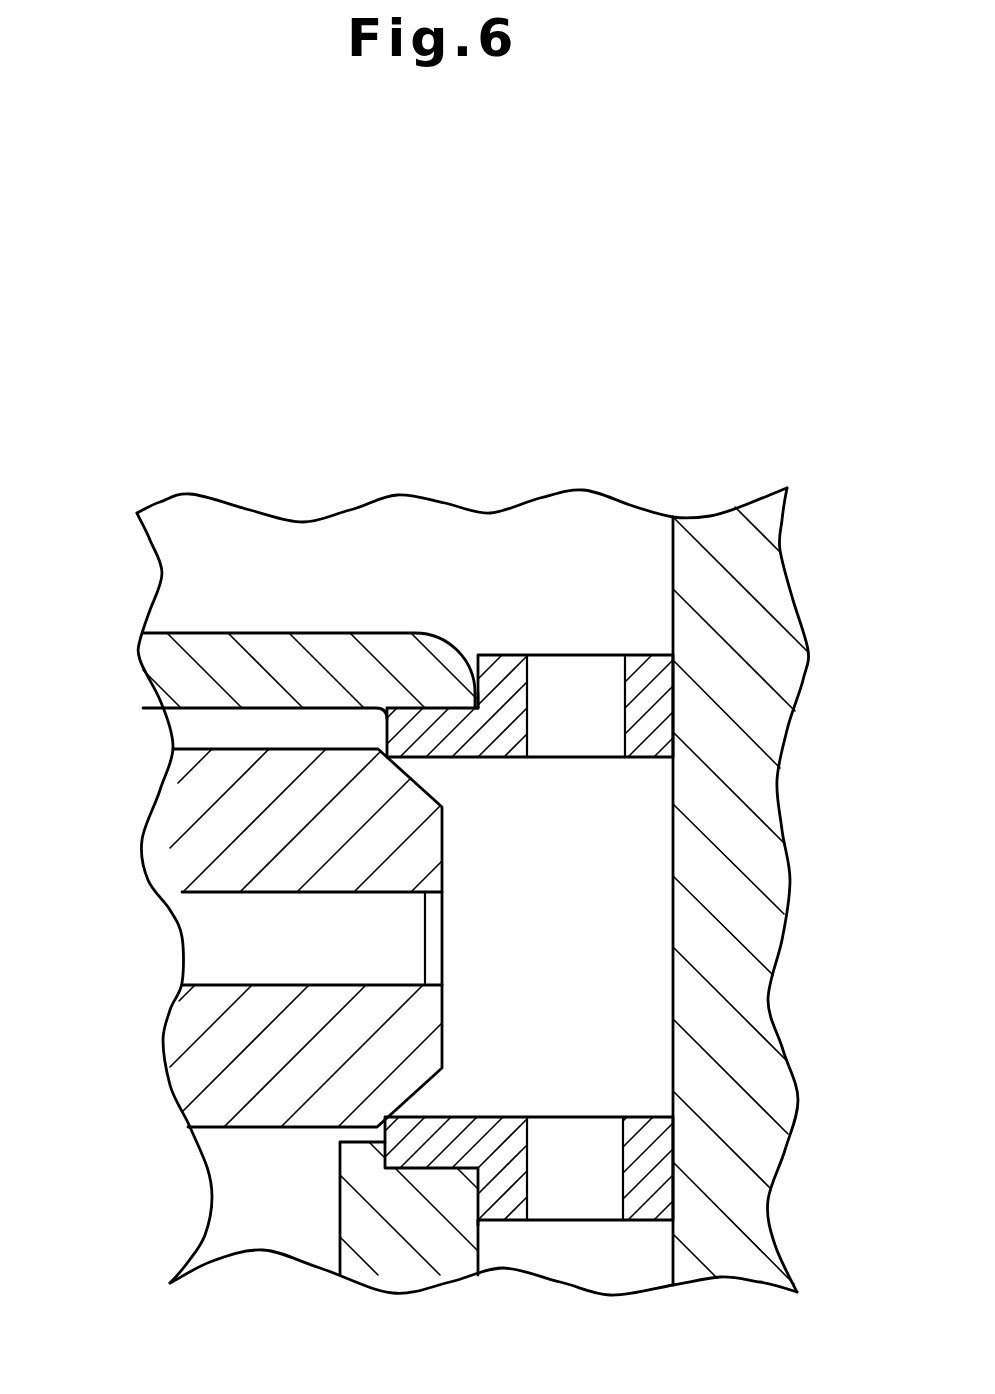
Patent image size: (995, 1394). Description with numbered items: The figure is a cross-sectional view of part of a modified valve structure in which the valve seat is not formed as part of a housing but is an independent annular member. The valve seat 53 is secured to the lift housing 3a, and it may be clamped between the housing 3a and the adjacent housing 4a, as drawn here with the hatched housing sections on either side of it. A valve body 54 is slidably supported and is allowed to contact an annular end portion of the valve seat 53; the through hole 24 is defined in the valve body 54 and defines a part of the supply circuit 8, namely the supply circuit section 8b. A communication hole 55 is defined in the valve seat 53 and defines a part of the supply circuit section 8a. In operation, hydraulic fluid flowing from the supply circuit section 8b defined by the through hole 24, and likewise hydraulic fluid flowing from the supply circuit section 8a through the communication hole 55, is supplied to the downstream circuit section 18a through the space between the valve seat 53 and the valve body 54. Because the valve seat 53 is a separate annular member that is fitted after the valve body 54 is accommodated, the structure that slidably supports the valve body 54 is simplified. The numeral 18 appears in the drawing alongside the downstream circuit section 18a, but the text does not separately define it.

The lift housing 3a is at (272, 647).
The adjacent housing 4a is at (772, 872).
The supply circuit section 8a is at (627, 525).
The supply circuit 8 is at (595, 818).
The supply circuit section 8b is at (230, 950).
The through hole 24 is at (202, 943).
The valve seat 53 is at (505, 672).
The valve body 54 is at (182, 1032).
The communication hole 55 is at (583, 742).
The downstream circuit section 18a is at (227, 1182).
The chamber 18 is at (118, 1189).